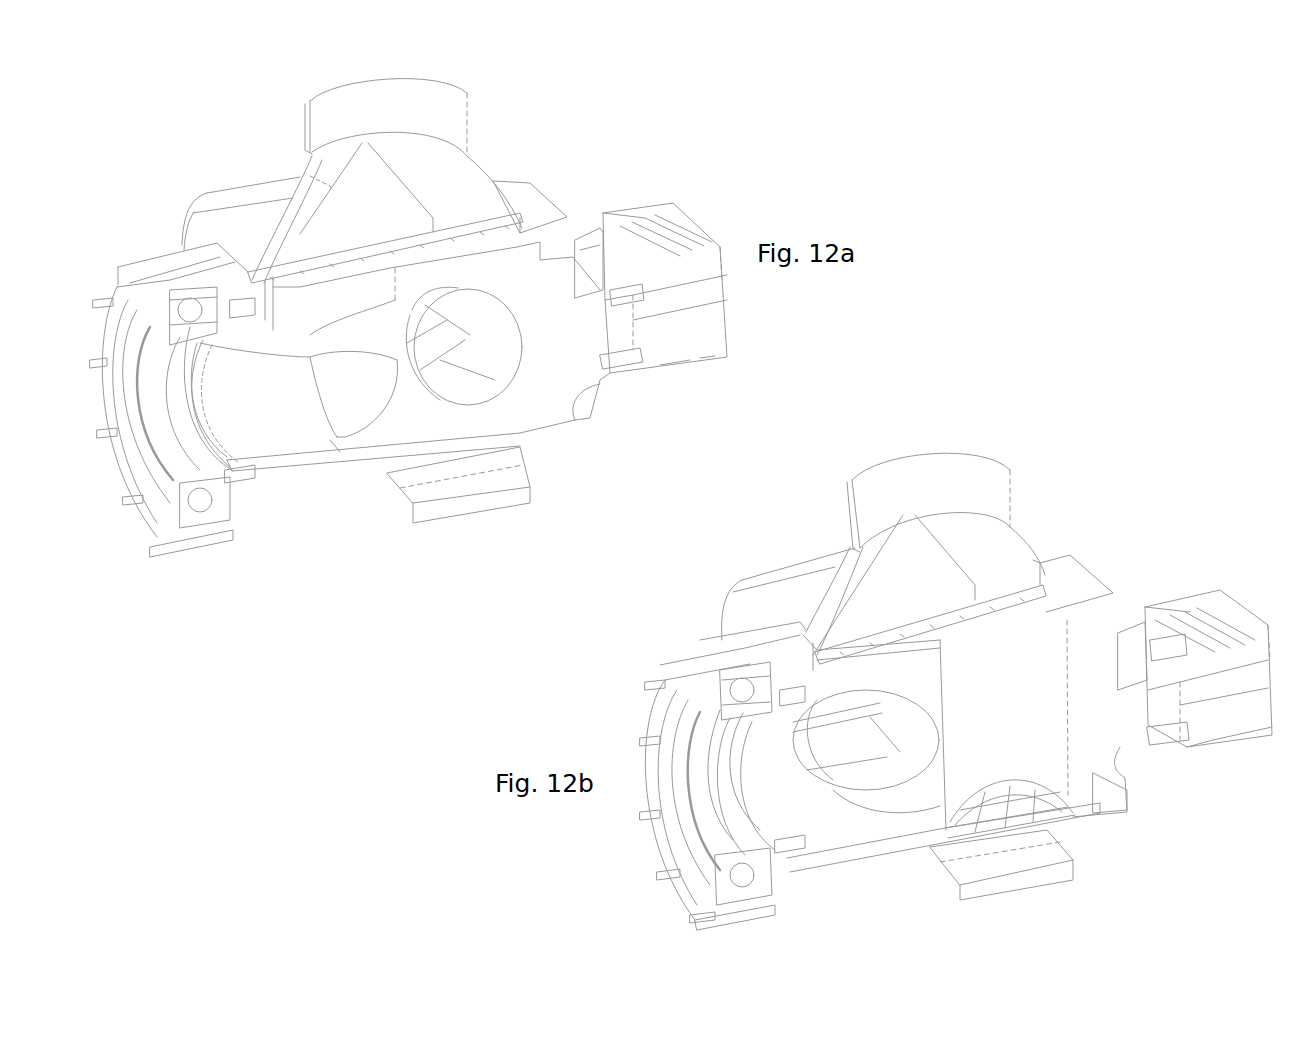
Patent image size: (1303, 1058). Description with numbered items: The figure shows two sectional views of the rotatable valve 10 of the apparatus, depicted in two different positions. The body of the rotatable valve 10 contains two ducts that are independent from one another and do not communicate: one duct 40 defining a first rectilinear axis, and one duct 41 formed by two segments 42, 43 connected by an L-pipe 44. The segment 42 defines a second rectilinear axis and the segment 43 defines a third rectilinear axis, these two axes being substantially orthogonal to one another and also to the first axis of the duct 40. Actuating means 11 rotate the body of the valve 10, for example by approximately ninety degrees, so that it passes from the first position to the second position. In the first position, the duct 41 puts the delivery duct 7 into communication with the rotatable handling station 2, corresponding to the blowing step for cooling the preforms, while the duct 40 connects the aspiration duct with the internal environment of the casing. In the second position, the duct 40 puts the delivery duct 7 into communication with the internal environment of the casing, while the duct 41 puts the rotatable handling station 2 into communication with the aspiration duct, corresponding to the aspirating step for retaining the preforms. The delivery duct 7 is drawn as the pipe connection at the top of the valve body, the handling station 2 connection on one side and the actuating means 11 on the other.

In FIG. 12A, the rotatable handling station 2 is at (118, 285).
In FIG. 12B, the rotatable handling station 2 is at (661, 668).
In FIG. 12A, the delivery duct 7 is at (428, 108).
In FIG. 12B, the delivery duct 7 is at (945, 459).
In FIG. 12A, the rotatable valve 10 is at (588, 162).
In FIG. 12B, the rotatable valve 10 is at (1110, 512).
In FIG. 12A, the actuating means 11 is at (672, 232).
In FIG. 12B, the actuating means 11 is at (1219, 596).
In FIG. 12A, the duct 40 is at (495, 375).
In FIG. 12B, the duct 40 is at (1036, 722).
In FIG. 12A, the duct 41 is at (341, 447).
In FIG. 12B, the duct 41 is at (858, 815).
In FIG. 12A, the segment 42 is at (295, 422).
In FIG. 12B, the segment 42 is at (773, 790).
In FIG. 12A, the segment 43 is at (362, 318).
In FIG. 12B, the segment 43 is at (890, 780).
In FIG. 12A, the L-pipe 44 is at (365, 400).